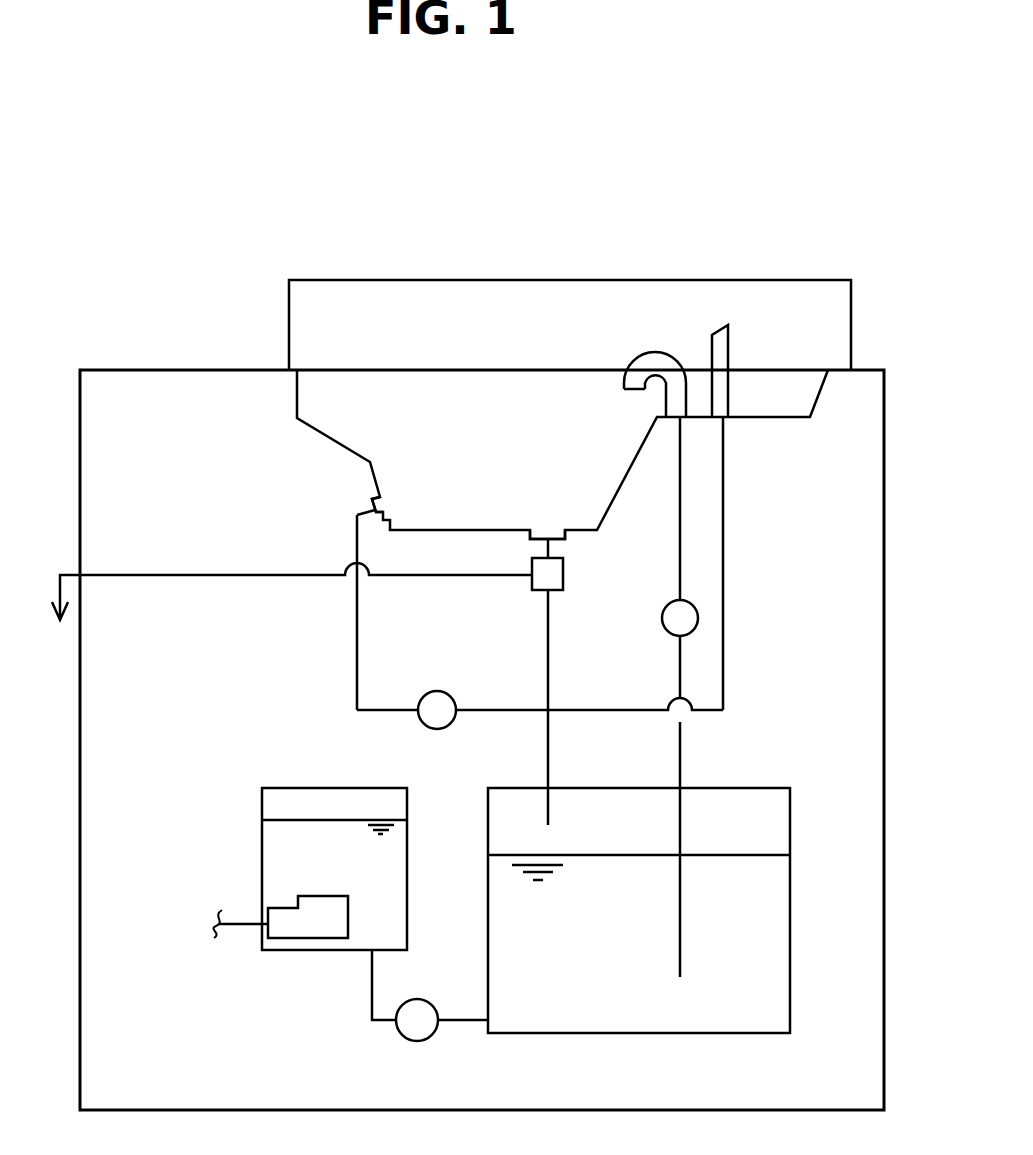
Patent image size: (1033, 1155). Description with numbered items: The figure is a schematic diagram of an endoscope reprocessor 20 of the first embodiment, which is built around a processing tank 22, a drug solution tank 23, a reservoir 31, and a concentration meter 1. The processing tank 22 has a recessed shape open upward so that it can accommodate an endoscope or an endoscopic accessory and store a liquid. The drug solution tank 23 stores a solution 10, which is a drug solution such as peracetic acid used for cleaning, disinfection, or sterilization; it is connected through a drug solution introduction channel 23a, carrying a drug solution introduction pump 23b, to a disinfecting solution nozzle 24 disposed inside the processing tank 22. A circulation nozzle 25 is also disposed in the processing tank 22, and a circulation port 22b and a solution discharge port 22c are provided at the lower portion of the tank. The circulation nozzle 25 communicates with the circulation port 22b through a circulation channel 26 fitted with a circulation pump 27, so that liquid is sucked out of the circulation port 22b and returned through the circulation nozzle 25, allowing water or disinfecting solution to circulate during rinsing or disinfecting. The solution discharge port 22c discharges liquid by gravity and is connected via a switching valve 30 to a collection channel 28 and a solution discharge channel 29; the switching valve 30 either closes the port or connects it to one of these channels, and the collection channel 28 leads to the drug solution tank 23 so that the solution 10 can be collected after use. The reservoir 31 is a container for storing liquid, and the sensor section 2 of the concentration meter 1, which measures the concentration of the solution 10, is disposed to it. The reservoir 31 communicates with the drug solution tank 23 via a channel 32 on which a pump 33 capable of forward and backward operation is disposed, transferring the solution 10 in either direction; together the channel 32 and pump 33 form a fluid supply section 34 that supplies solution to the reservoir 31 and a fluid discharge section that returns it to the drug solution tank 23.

The endoscope reprocessor 20 is at (233, 264).
The processing tank 22 is at (357, 455).
The circulation port 22b is at (382, 508).
The solution discharge port 22c is at (546, 530).
The disinfecting solution nozzle 24 is at (633, 356).
The circulation nozzle 25 is at (712, 338).
The drug solution introduction channel 23a is at (678, 546).
The drug solution introduction pump 23b is at (664, 610).
The solution discharge channel 29 is at (276, 575).
The switching valve 30 is at (563, 580).
The collection channel 28 is at (549, 748).
The circulation channel 26 is at (512, 710).
The circulation pump 27 is at (431, 691).
The reservoir 31 is at (266, 788).
The solution 10 is at (307, 820).
The concentration meter 1 is at (273, 882).
The sensor section 2 is at (298, 896).
The channel 32 is at (372, 1003).
The pump 33 is at (417, 1042).
The fluid supply section 34 is at (381, 1058).
The drug solution tank 23 is at (488, 828).